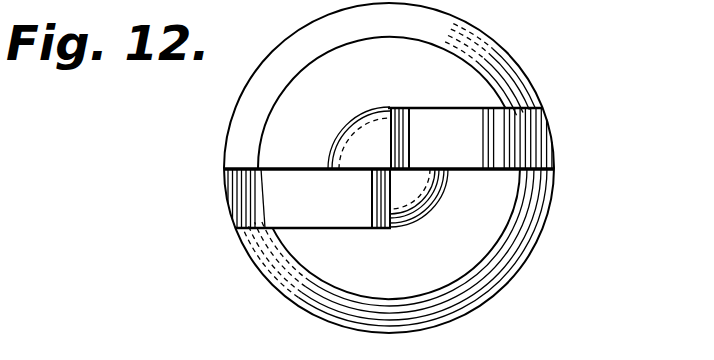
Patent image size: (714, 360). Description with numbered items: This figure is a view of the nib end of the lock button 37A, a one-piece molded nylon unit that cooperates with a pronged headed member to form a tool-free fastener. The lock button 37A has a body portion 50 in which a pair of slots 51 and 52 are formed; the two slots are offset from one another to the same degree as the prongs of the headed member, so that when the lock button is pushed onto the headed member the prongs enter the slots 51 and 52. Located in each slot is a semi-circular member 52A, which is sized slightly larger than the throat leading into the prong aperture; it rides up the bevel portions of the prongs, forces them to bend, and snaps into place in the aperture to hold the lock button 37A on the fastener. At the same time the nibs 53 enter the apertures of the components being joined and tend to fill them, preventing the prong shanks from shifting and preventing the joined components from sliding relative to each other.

The body portion 50 is at (262, 130).
The lock button 37A is at (526, 66).
The slot 51 is at (452, 136).
The slot 52 is at (327, 207).
The semi-circular member 52A is at (403, 133).
The nib 53 is at (353, 131).